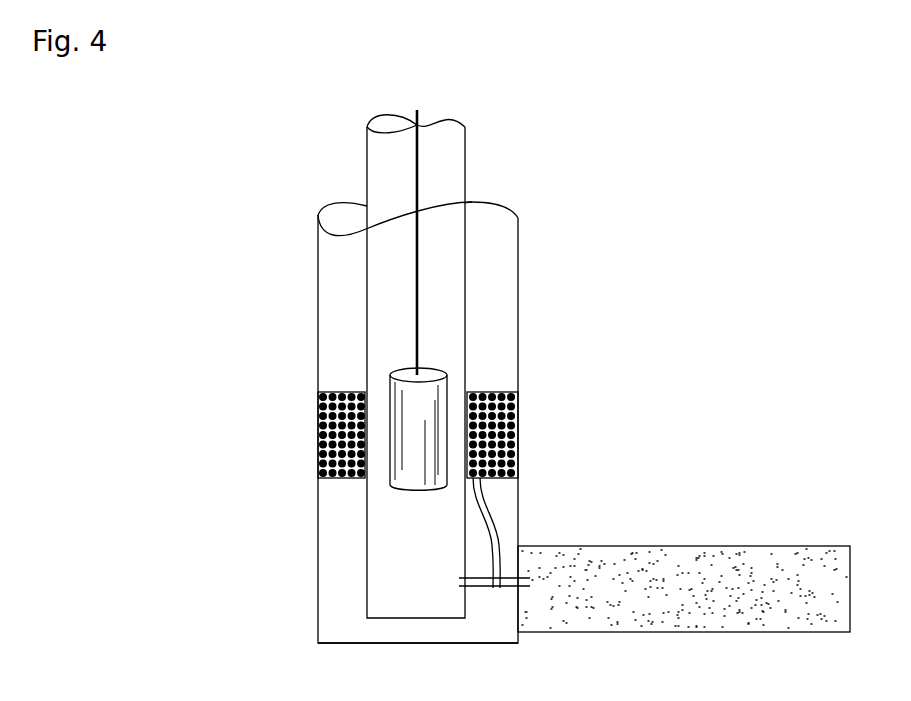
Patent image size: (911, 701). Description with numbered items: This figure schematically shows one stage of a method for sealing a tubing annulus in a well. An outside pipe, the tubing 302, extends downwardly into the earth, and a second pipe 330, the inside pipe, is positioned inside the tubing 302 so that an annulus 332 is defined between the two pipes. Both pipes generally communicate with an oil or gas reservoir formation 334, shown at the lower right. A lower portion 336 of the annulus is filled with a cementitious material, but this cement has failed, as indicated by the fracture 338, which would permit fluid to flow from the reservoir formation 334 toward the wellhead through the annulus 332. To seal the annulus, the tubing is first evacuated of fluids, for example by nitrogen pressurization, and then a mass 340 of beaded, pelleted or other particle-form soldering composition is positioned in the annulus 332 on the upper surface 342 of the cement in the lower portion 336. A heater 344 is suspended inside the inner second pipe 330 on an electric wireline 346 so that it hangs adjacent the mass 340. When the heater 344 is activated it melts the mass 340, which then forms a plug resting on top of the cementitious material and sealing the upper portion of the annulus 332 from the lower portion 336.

The tubing 302 is at (518, 263).
The second pipe 330 is at (467, 152).
The annulus 332 is at (492, 241).
The oil or gas reservoir formation 334 is at (790, 547).
The lower portion of the annulus 336 is at (335, 530).
The fracture 338 is at (482, 510).
The mass of soldering composition 340 is at (337, 370).
The upper surface of the cement 342 is at (510, 473).
The heater 344 is at (390, 442).
The electric wireline 346 is at (412, 300).